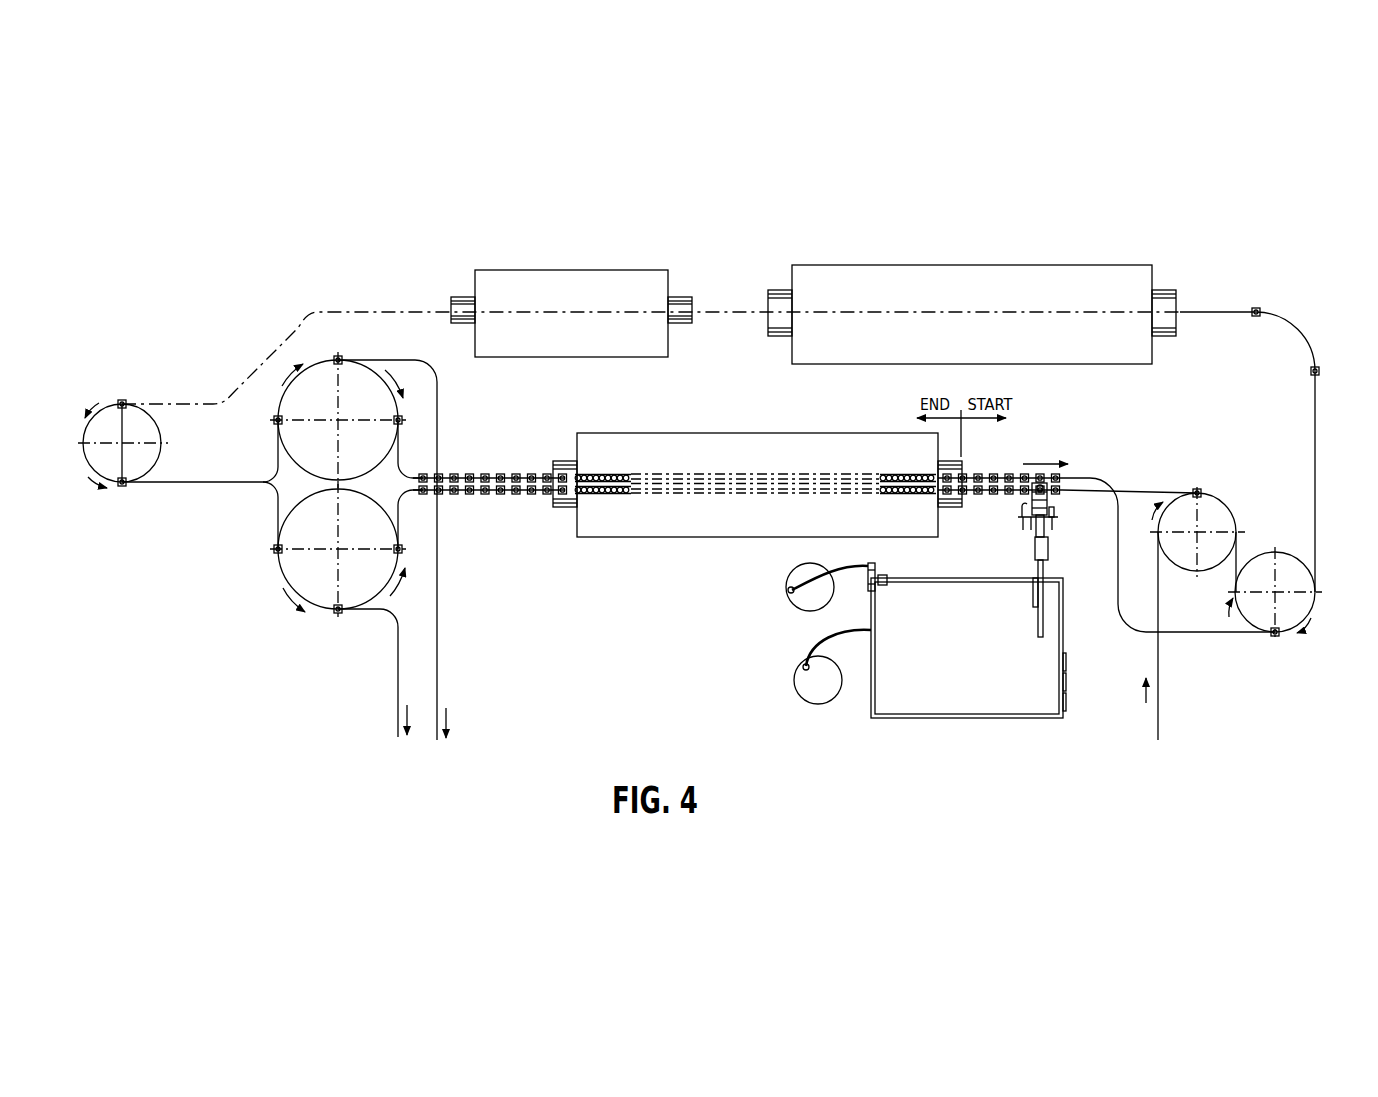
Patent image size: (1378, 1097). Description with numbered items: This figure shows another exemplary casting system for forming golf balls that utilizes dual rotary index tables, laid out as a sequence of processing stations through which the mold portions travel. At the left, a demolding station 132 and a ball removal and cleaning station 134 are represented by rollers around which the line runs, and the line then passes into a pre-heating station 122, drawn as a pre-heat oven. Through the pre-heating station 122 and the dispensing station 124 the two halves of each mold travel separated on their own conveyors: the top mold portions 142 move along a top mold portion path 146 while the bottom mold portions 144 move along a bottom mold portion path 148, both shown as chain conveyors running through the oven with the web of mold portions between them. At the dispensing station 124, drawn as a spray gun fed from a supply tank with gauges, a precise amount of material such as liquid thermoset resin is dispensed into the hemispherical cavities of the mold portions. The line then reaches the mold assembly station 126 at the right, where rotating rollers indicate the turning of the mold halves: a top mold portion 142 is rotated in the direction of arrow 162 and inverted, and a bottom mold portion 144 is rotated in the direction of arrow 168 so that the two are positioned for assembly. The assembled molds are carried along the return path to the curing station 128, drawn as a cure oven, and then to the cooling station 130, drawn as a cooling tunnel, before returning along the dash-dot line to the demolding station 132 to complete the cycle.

The pre-heating station 122 is at (649, 537).
The dispensing station 124 is at (1045, 548).
The mold assembly station 126 is at (1255, 515).
The curing station 128 is at (993, 265).
The cooling station 130 is at (555, 270).
The demolding station 132 is at (258, 495).
The ball removal and cleaning station 134 is at (338, 358).
The top mold portion 142 is at (541, 495).
The bottom mold portion 144 is at (541, 474).
The top mold portion path 146 is at (838, 478).
The bottom mold portion path 148 is at (806, 492).
The arrow 162 is at (1234, 510).
The arrow 168 is at (1299, 624).